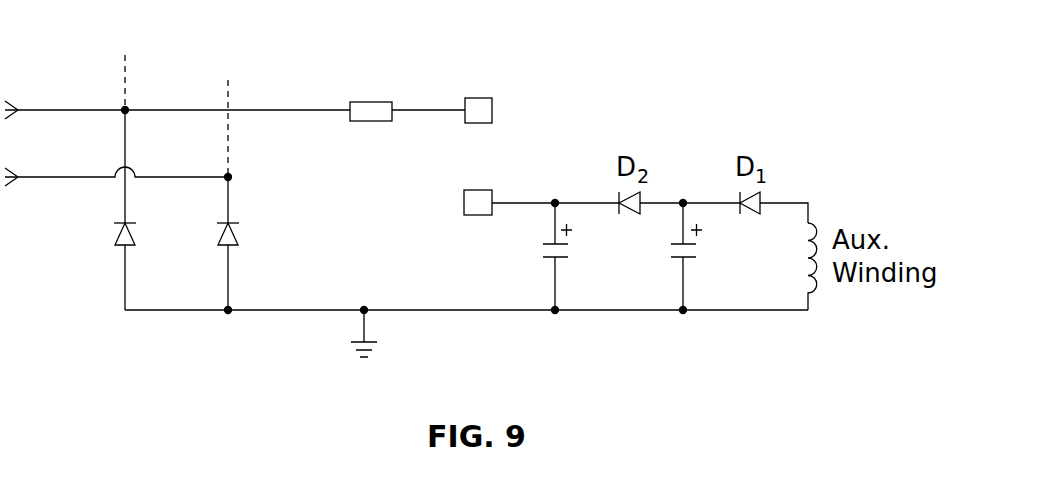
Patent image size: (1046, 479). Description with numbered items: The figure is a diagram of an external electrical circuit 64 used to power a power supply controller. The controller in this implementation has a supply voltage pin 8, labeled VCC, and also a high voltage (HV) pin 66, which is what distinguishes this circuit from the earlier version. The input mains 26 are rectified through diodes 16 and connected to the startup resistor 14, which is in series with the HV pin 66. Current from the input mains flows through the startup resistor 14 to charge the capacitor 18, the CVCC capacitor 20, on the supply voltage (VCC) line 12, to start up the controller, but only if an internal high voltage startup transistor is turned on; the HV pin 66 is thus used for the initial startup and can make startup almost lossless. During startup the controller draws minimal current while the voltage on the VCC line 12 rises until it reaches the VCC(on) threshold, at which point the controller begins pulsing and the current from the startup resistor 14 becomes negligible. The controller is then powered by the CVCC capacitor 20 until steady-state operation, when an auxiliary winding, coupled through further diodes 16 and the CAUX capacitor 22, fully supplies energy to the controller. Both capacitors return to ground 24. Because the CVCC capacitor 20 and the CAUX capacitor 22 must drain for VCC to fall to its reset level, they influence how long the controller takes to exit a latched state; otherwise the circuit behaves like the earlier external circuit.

The supply voltage pin 8 is at (464, 203).
The supply voltage (VCC) line 12 is at (520, 202).
The startup resistor 14 is at (371, 122).
The diode 16 is at (119, 246).
The capacitor 18 is at (553, 259).
The CVCC capacitor 20 is at (586, 304).
The CAUX capacitor 22 is at (682, 259).
The ground 24 is at (362, 329).
The input mains 26 is at (63, 110).
The electrical circuit 64 is at (843, 41).
The high voltage (HV) pin 66 is at (492, 110).